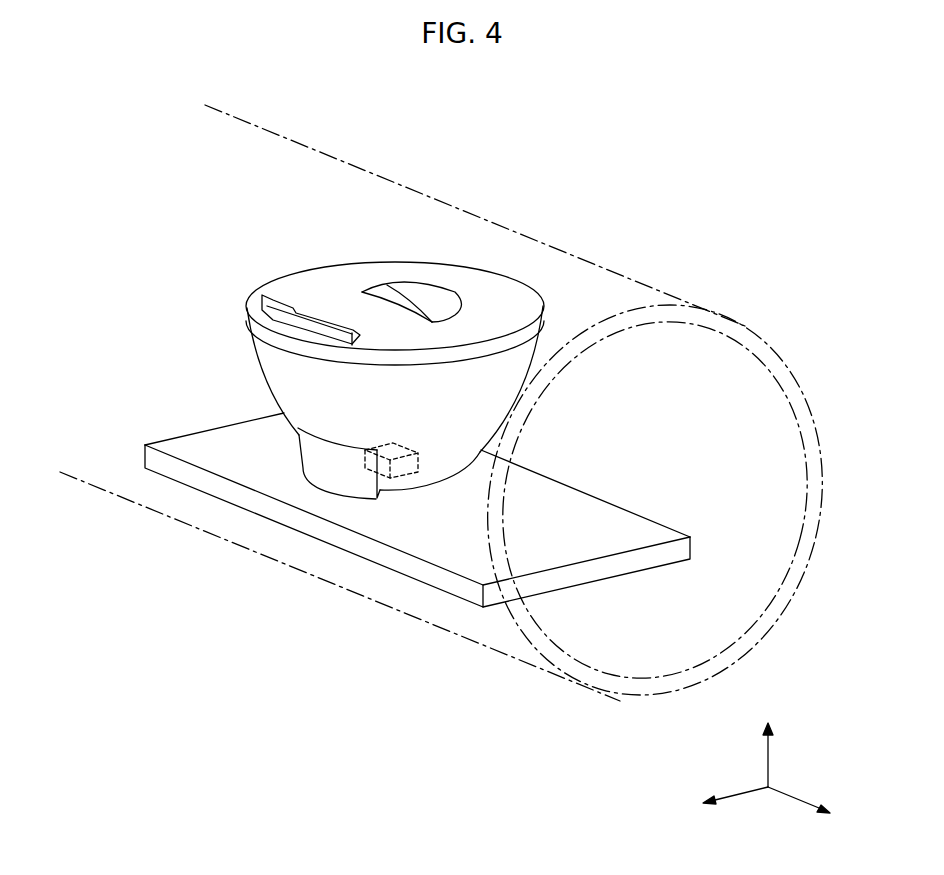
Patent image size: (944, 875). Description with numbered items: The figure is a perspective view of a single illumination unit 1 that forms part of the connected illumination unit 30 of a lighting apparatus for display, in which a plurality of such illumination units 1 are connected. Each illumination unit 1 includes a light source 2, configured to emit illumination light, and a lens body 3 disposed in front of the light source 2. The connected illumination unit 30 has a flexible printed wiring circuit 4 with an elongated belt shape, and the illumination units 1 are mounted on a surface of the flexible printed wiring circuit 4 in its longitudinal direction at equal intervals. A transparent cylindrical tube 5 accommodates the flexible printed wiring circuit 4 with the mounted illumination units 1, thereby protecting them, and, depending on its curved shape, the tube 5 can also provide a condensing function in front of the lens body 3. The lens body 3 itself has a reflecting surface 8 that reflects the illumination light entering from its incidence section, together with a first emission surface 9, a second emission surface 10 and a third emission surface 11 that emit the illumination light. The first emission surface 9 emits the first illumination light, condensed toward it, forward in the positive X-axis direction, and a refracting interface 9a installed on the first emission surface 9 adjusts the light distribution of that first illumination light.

The illumination unit 1 is at (413, 247).
The light source 2 is at (366, 456).
The lens body 3 is at (245, 331).
The flexible printed wiring circuit 4 is at (633, 520).
The transparent cylindrical tube 5 is at (613, 273).
The reflecting surface 8 is at (273, 370).
The first emission surface 9 is at (312, 282).
The refracting interface 9a is at (440, 297).
The second emission surface 10 is at (307, 448).
The third emission surface 11 is at (275, 300).
The connected illumination unit 30 is at (357, 195).